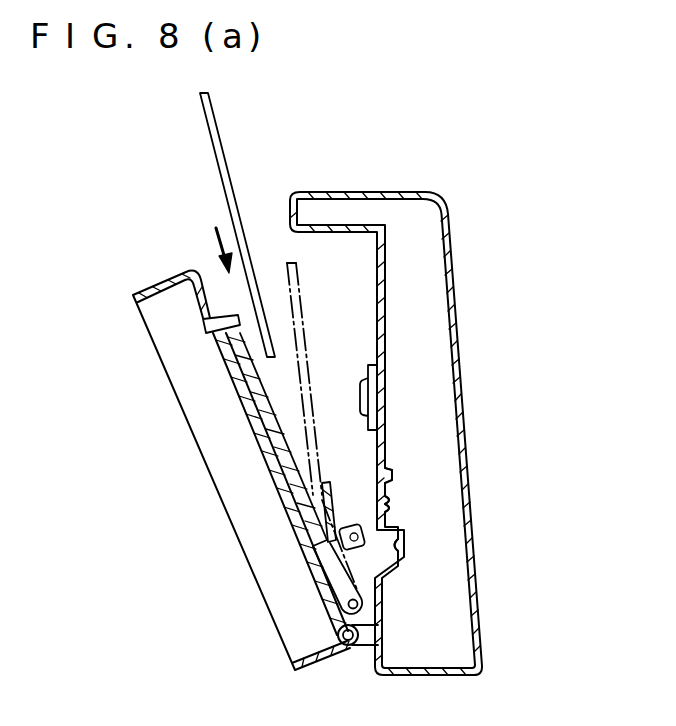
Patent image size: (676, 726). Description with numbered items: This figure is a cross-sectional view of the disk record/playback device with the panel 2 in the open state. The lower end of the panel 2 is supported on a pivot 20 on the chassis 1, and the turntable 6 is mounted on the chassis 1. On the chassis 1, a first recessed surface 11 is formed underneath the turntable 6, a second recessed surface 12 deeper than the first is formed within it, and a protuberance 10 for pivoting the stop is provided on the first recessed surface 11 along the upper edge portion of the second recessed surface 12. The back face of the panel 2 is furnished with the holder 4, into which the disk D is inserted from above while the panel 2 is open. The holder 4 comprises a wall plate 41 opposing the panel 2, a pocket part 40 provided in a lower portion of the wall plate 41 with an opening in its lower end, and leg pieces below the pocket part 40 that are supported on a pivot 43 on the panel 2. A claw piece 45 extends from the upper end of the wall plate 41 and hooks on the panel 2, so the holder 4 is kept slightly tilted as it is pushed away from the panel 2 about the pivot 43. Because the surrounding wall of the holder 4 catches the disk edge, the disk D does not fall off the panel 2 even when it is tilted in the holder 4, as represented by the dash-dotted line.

The chassis 1 is at (387, 303).
The panel 2 is at (163, 286).
The holder 4 is at (122, 432).
The turntable 6 is at (373, 382).
The protuberance 10 is at (397, 508).
The first recessed surface 11 is at (395, 497).
The second recessed surface 12 is at (407, 553).
The pivot 20 is at (358, 634).
The pocket part 40 is at (334, 510).
The wall plate 41 is at (247, 400).
The pivot 43 is at (358, 604).
The claw piece 45 is at (203, 333).
The disk D is at (218, 142).